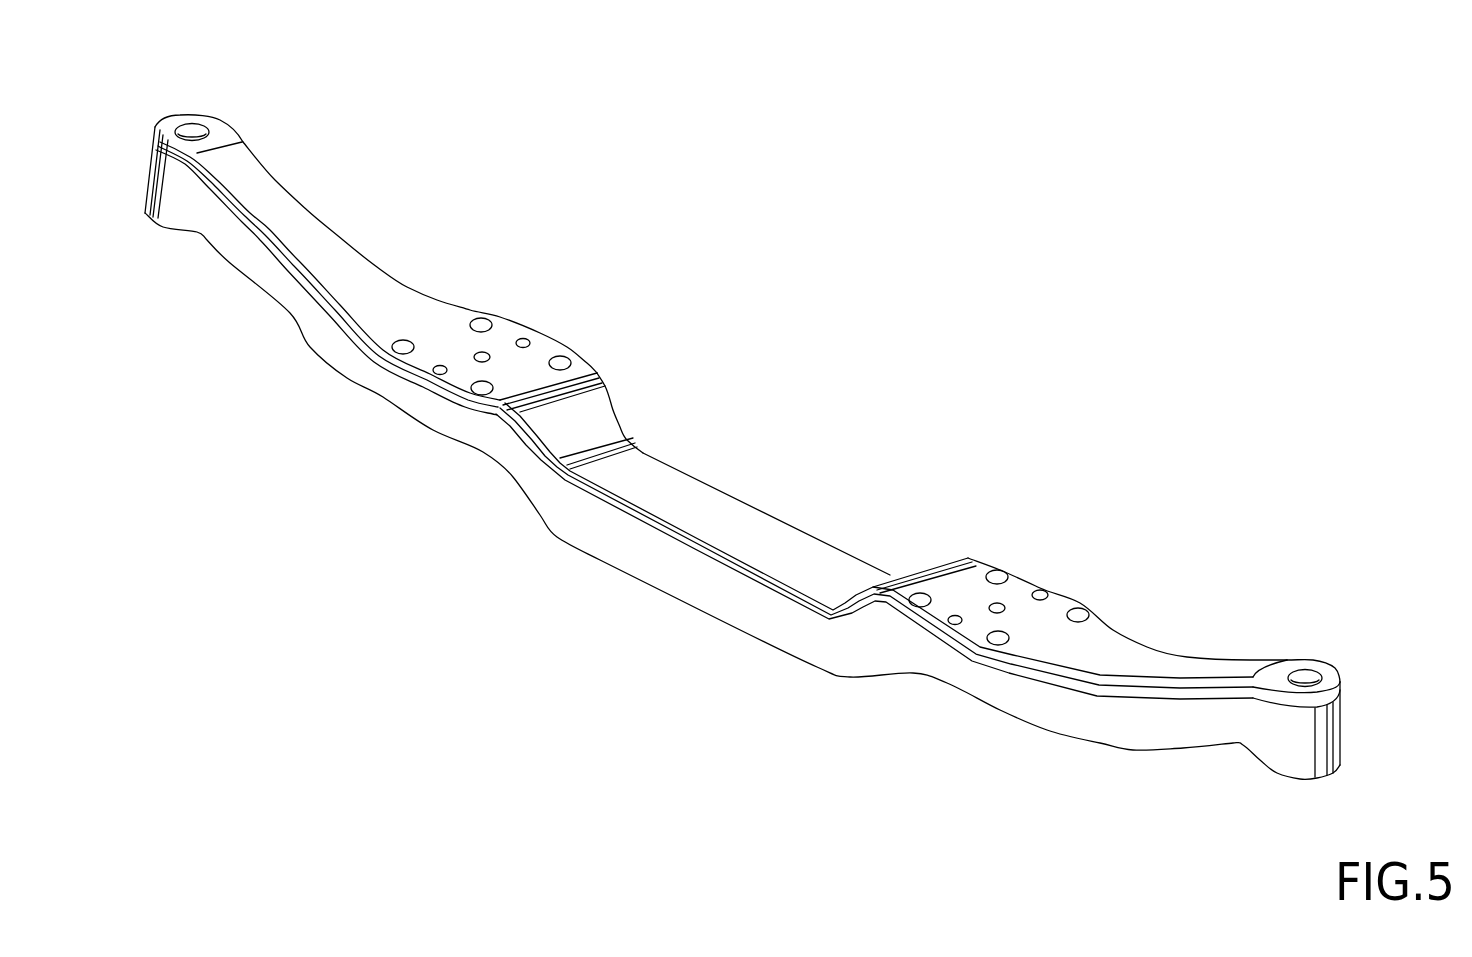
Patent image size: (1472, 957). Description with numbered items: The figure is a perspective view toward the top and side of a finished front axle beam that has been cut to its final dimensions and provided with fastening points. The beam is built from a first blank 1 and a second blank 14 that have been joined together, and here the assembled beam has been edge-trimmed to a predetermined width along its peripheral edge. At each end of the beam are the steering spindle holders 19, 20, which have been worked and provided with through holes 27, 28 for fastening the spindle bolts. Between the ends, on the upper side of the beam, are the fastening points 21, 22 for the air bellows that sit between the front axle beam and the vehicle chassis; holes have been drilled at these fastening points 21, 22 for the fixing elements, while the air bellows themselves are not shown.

The first blank 1 is at (647, 560).
The second blank 14 is at (730, 510).
The steering spindle holder 19 is at (150, 177).
The steering spindle holder 20 is at (1343, 720).
The fastening point 21 is at (527, 303).
The fastening point 22 is at (1047, 574).
The through hole 27 is at (195, 128).
The through hole 28 is at (1305, 672).